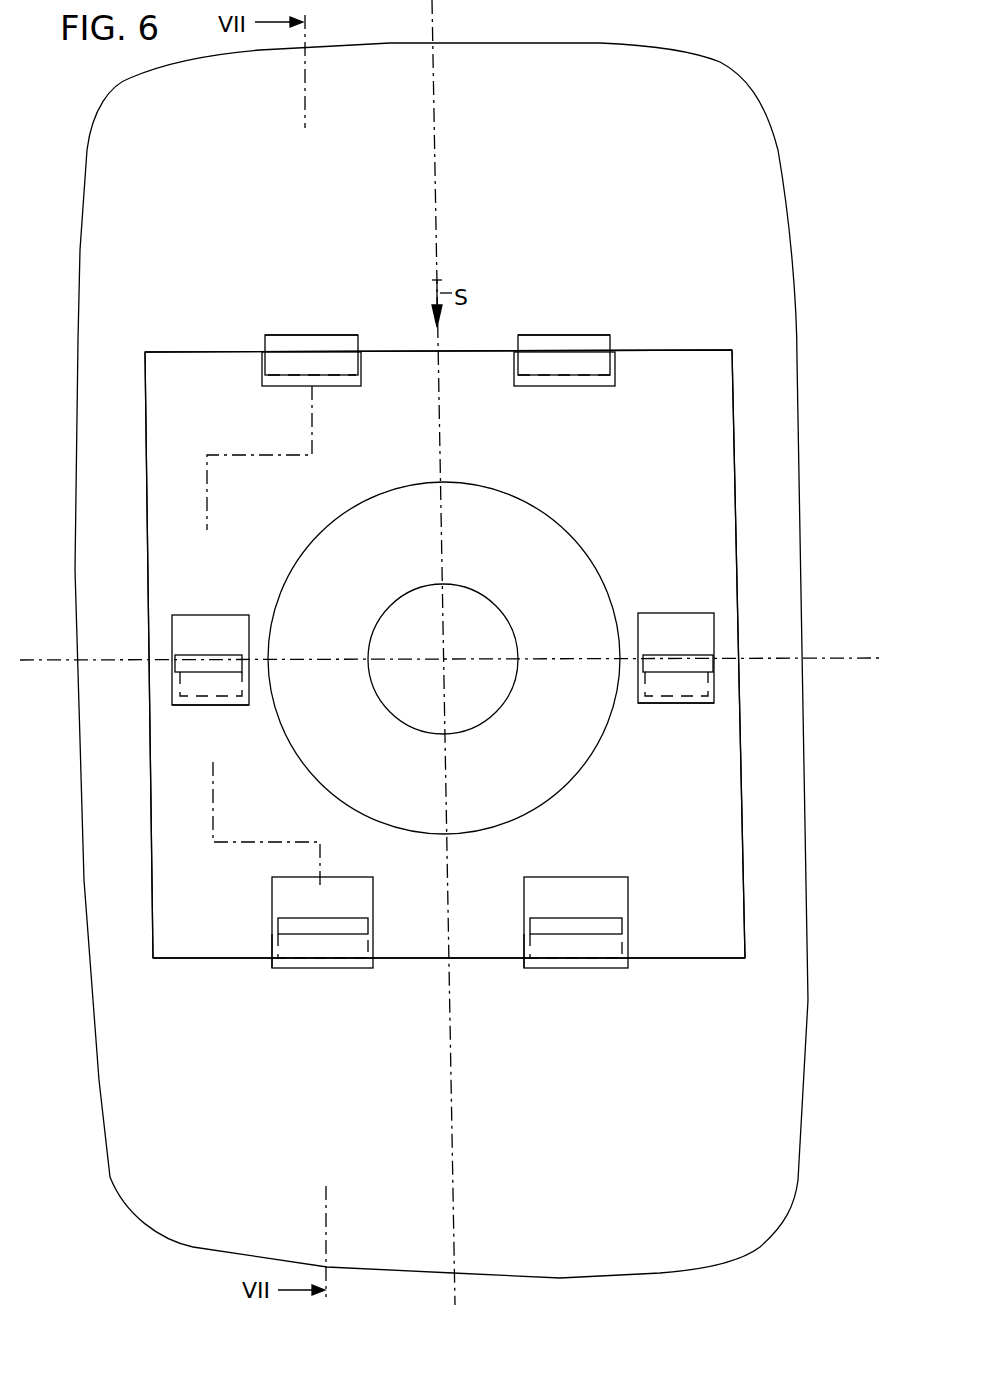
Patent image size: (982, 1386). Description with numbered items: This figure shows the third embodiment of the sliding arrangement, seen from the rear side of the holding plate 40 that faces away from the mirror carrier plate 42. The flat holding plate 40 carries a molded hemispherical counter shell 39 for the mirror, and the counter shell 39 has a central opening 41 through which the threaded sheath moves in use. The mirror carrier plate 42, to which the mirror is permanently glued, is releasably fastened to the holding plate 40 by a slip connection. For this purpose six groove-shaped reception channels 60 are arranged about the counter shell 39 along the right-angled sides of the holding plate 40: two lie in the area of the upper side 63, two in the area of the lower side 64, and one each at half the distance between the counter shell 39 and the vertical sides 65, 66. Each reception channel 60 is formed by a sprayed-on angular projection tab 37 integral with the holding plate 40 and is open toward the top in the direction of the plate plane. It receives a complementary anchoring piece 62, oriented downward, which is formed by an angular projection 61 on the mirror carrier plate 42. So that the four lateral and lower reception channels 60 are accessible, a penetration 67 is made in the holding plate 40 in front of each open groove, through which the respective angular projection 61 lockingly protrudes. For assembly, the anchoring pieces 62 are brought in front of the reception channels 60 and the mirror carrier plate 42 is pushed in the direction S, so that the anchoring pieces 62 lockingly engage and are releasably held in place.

The angular projection tab 37 is at (262, 364).
The counter shell 39 is at (582, 730).
The holding plate 40 is at (716, 363).
The central opening 41 is at (477, 705).
The mirror carrier plate 42 is at (745, 198).
The reception channel 60 is at (322, 375).
The angular projection 61 is at (287, 334).
The anchoring piece 62 is at (327, 343).
The upper side 63 is at (683, 350).
The lower side 64 is at (712, 960).
The vertical side 65 is at (152, 845).
The vertical side 66 is at (745, 849).
The penetration 67 is at (190, 615).